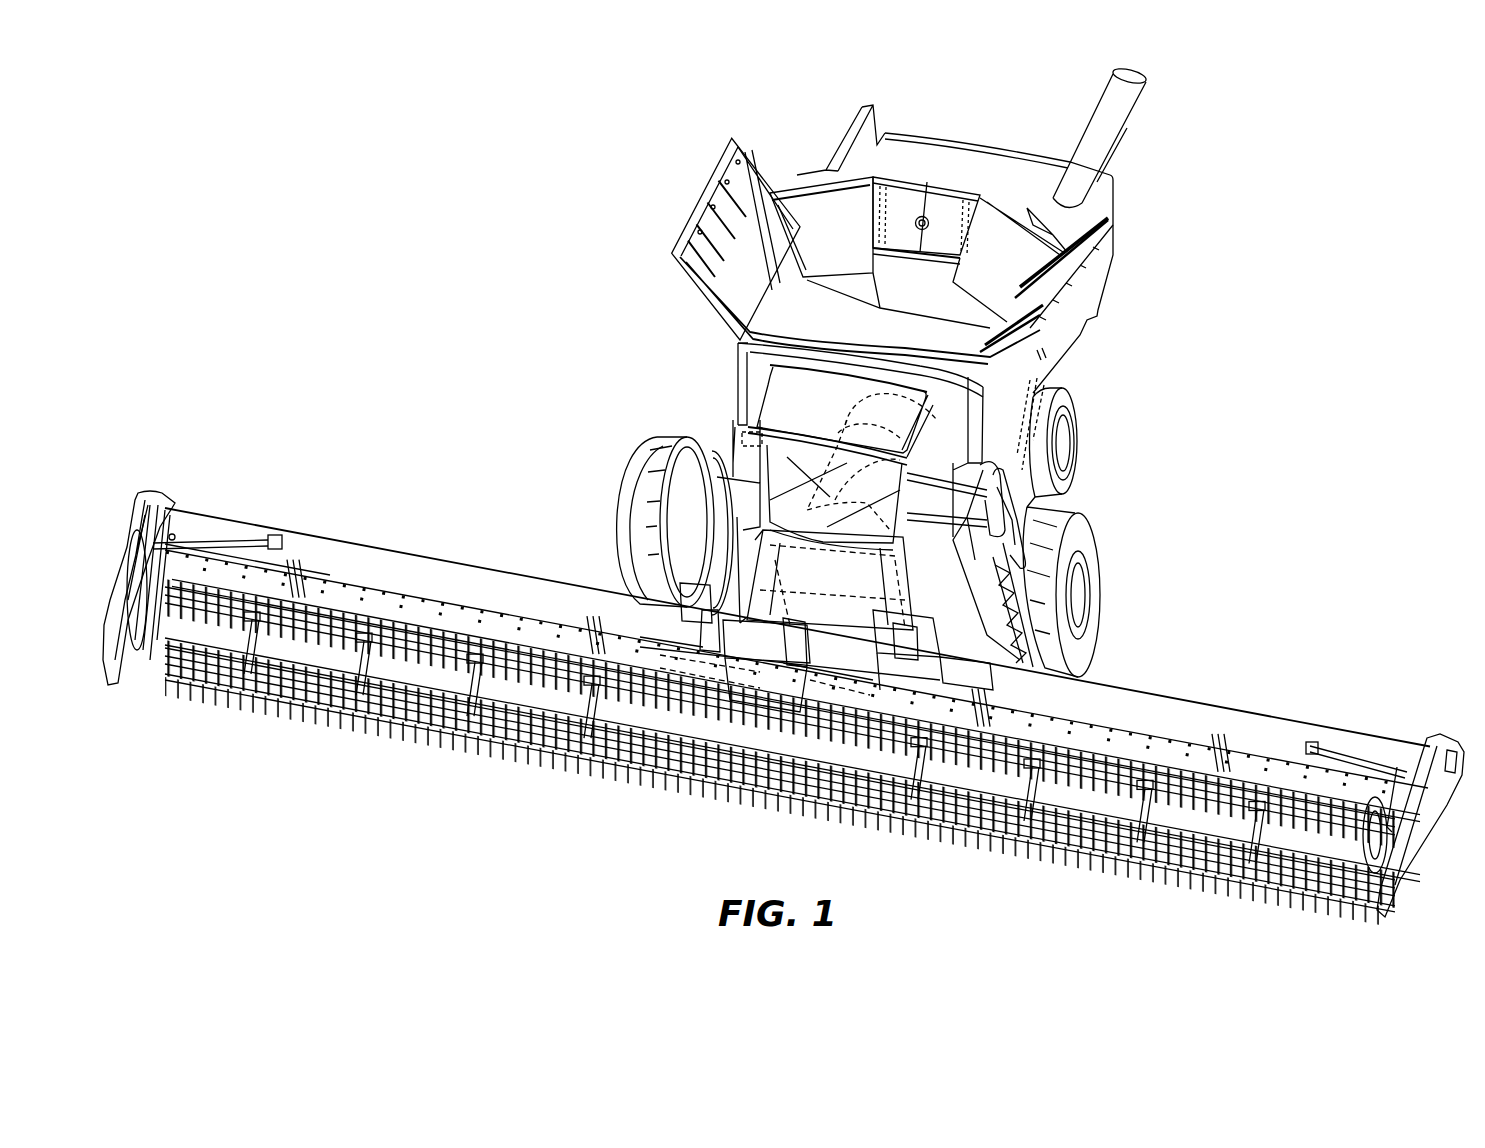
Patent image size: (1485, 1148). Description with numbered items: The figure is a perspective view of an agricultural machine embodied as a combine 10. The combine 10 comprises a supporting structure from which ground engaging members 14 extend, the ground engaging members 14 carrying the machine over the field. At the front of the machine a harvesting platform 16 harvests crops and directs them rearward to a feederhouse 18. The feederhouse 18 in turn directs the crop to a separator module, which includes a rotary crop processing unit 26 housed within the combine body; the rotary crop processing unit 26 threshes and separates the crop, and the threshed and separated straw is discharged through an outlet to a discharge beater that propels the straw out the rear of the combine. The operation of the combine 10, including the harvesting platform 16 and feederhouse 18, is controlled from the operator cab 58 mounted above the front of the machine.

The combine 10 is at (1195, 284).
The ground engaging members 14 is at (1073, 403).
The harvesting platform 16 is at (281, 488).
The feederhouse 18 is at (763, 563).
The rotary crop processing unit 26 is at (737, 437).
The operator cab 58 is at (753, 373).